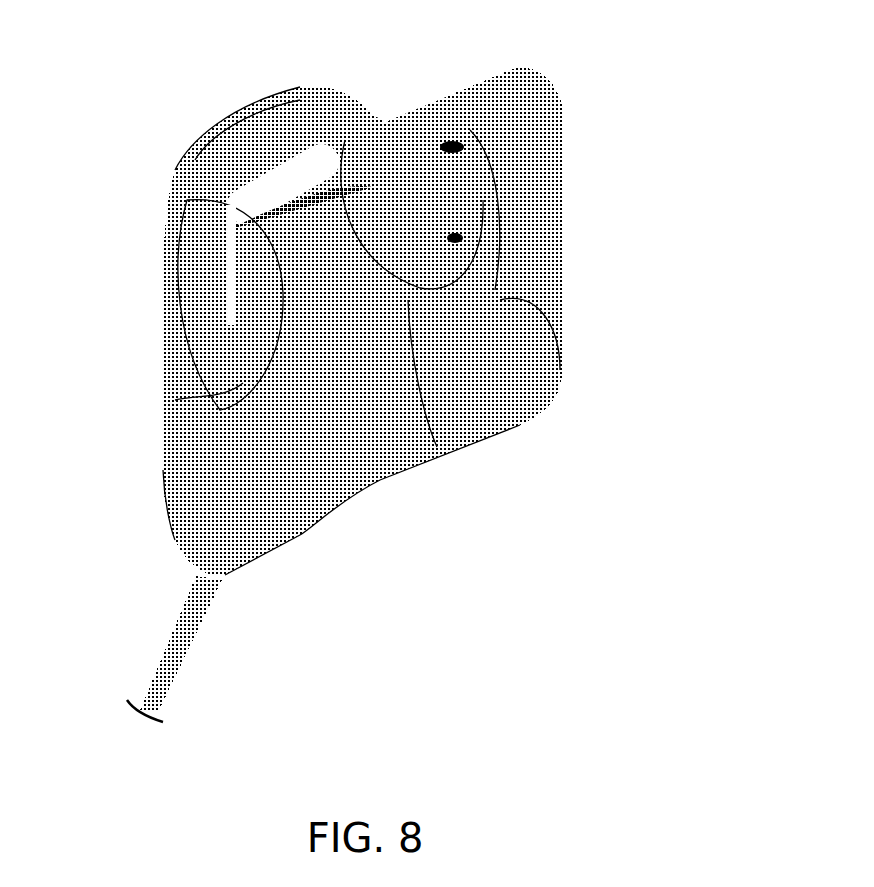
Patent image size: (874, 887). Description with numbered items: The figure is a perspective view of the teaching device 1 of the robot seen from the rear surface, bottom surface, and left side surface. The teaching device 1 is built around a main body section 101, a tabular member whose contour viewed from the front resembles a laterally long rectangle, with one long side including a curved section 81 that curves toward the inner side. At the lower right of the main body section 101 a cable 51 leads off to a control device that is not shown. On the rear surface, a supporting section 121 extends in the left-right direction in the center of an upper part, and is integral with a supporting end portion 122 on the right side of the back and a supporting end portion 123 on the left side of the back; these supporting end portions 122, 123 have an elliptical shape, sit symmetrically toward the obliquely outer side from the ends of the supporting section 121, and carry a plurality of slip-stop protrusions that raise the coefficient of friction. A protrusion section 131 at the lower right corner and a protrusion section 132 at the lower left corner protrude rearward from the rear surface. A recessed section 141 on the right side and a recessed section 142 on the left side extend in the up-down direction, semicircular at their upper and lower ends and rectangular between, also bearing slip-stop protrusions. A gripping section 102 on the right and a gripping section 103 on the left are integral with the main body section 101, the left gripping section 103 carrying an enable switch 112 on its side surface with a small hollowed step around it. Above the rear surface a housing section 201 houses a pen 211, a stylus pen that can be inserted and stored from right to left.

The teaching device 1 is at (596, 92).
The cable 51 is at (173, 660).
The curved section 81 is at (368, 490).
The main body section 101 is at (470, 437).
The gripping section 102 is at (243, 383).
The gripping section 103 is at (433, 447).
The enable switch 112 is at (457, 223).
The supporting section 121 is at (203, 150).
The supporting end portion 122 is at (160, 310).
The supporting end portion 123 is at (387, 173).
The protrusion section 131 is at (173, 537).
The protrusion section 132 is at (557, 363).
The recessed section 141 is at (185, 457).
The recessed section 142 is at (510, 250).
The housing section 201 is at (273, 220).
The pen 211 is at (240, 135).